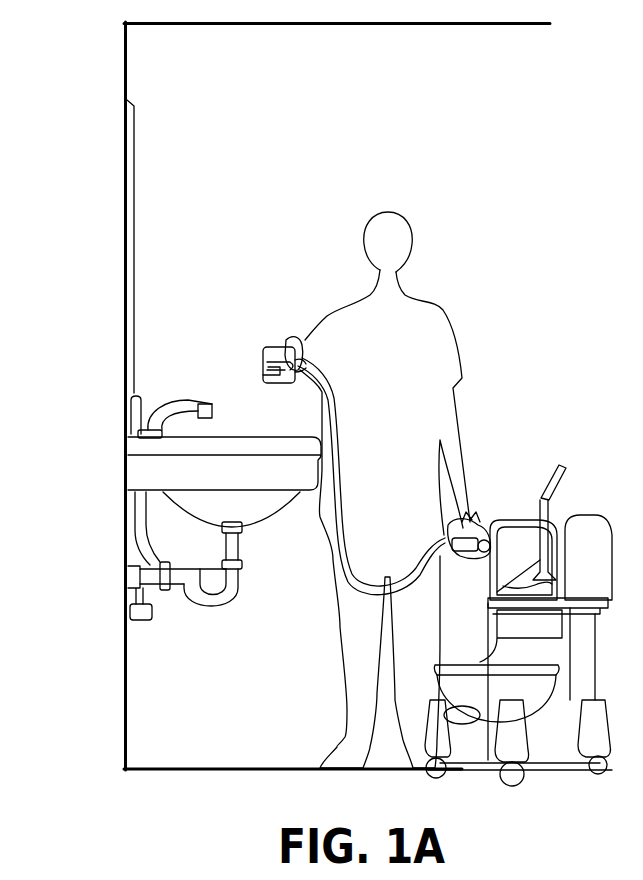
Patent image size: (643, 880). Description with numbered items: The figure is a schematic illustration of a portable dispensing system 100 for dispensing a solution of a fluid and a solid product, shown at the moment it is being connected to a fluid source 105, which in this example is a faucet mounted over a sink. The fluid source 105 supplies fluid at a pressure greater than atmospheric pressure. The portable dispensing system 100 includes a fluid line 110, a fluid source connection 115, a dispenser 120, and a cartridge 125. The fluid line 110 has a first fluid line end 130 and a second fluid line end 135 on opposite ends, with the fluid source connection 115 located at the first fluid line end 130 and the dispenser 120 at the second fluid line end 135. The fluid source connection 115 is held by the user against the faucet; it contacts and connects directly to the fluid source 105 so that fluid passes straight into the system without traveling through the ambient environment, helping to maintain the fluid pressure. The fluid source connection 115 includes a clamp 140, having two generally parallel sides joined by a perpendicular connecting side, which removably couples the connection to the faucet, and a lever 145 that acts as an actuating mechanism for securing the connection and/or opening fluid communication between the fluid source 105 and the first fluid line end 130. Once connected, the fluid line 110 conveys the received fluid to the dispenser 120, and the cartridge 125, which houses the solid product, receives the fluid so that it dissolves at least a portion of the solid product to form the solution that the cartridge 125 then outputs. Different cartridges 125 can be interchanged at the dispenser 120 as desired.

The portable dispensing system 100 is at (312, 566).
The fluid source 105 is at (205, 384).
The fluid line 110 is at (306, 502).
The fluid source connection 115 is at (275, 326).
The dispenser 120 is at (503, 522).
The cartridge 125 is at (459, 558).
The first fluid line end 130 is at (305, 360).
The second fluid line end 135 is at (457, 520).
The clamp 140 is at (262, 376).
The lever 145 is at (297, 338).